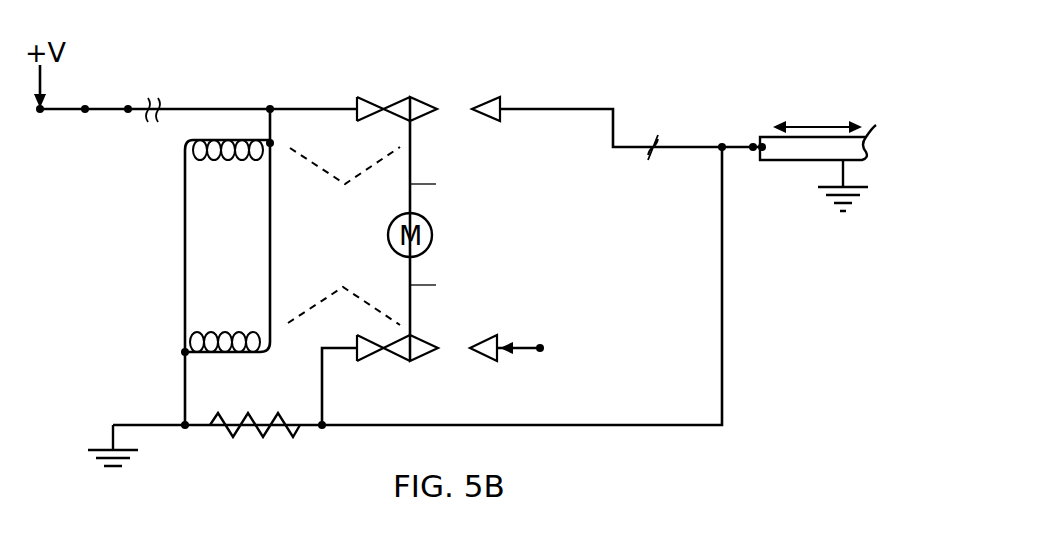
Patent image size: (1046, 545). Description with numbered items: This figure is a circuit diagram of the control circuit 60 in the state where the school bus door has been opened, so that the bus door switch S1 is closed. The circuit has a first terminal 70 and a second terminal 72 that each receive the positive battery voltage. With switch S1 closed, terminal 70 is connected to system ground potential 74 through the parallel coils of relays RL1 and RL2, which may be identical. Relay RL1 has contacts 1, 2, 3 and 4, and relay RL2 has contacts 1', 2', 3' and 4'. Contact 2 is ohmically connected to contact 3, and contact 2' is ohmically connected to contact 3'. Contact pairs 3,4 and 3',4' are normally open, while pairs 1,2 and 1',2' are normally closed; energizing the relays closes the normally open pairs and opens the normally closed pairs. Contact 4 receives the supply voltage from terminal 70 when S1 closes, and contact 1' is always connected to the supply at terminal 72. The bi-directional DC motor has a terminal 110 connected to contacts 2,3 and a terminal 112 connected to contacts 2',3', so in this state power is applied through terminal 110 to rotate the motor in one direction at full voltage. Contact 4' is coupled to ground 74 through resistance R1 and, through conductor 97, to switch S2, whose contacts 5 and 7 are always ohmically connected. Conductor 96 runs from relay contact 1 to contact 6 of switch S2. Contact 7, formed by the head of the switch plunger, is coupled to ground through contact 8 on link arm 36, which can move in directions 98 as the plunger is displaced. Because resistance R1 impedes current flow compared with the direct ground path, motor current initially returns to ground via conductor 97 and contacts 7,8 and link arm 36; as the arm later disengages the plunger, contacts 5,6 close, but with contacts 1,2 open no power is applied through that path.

The relay RL1 contact 1 is at (508, 84).
The relay RL1 contact 2 is at (432, 88).
The relay RL1 contact 3 is at (395, 88).
The relay RL1 contact 4 is at (378, 84).
The relay RL2 contact 1' is at (503, 368).
The relay RL2 contact 2' is at (436, 369).
The relay RL2 contact 3' is at (410, 370).
The relay RL2 contact 4' is at (383, 370).
The switch S2 contact 5 is at (659, 146).
The switch S2 contact 6 is at (650, 143).
The switch S2 contact 7 is at (754, 152).
The switch S2 contact 8 is at (761, 144).
The second link arm 36 is at (857, 155).
The circuit 60 is at (612, 269).
The first terminal 70 is at (270, 107).
The second terminal 72 is at (541, 346).
The system ground potential 74 is at (100, 462).
The conductor wire 96 is at (563, 108).
The wire conductor 97 is at (722, 370).
The directions 98 is at (820, 125).
The motor terminal 110 is at (450, 190).
The motor terminal 112 is at (450, 290).
The bus door switch S1 is at (107, 108).
The switch S2 is at (727, 138).
The relay RL1 is at (214, 160).
The relay RL2 is at (226, 334).
The resistance R1 is at (252, 440).